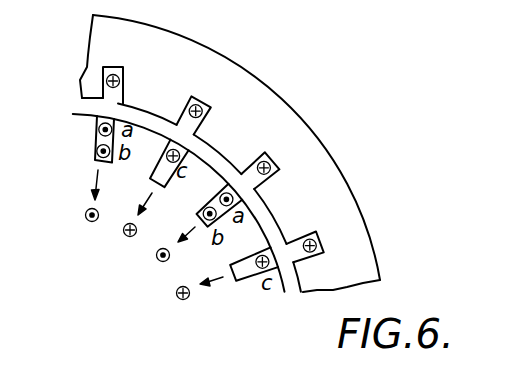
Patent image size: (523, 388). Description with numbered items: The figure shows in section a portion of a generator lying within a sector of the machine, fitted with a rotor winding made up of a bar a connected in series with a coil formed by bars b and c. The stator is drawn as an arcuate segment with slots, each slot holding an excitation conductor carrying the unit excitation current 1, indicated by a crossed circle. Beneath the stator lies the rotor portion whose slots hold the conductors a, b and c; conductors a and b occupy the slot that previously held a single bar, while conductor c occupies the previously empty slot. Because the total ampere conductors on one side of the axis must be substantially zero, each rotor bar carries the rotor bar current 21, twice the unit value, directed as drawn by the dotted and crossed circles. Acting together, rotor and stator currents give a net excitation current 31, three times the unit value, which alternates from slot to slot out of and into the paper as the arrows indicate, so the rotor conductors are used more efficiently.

The excitation current per slot (I) 1 is at (220, 149).
The rotor bar current (2I) 21 is at (172, 197).
The net excitation current (3I) 31 is at (120, 254).